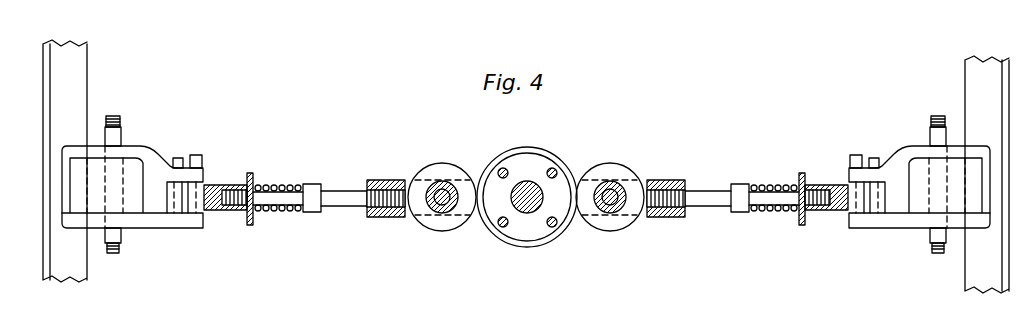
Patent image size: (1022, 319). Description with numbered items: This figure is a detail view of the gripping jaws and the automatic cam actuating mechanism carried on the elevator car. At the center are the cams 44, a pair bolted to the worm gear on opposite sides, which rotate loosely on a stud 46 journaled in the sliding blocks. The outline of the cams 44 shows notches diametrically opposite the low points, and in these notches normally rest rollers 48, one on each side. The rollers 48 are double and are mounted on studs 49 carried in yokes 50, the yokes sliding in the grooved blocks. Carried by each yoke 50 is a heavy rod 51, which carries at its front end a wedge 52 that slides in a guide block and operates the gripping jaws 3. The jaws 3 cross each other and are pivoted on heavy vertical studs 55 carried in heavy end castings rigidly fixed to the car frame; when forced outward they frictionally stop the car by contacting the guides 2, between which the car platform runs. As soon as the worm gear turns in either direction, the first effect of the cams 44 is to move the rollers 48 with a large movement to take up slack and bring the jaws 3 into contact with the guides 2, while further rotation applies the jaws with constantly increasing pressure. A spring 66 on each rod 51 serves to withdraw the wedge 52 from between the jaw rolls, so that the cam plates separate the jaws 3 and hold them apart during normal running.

The guides 2 is at (526, 166).
The gripping jaws 3 is at (526, 187).
The vertical studs 55 is at (114, 134).
The wedge 52 is at (206, 185).
The spring 66 is at (283, 185).
The rod 51 is at (337, 201).
The yoke 50 is at (381, 180).
The rollers 48 is at (442, 172).
The studs 49 is at (437, 205).
The cams 44 is at (548, 153).
The stud 46 is at (520, 206).